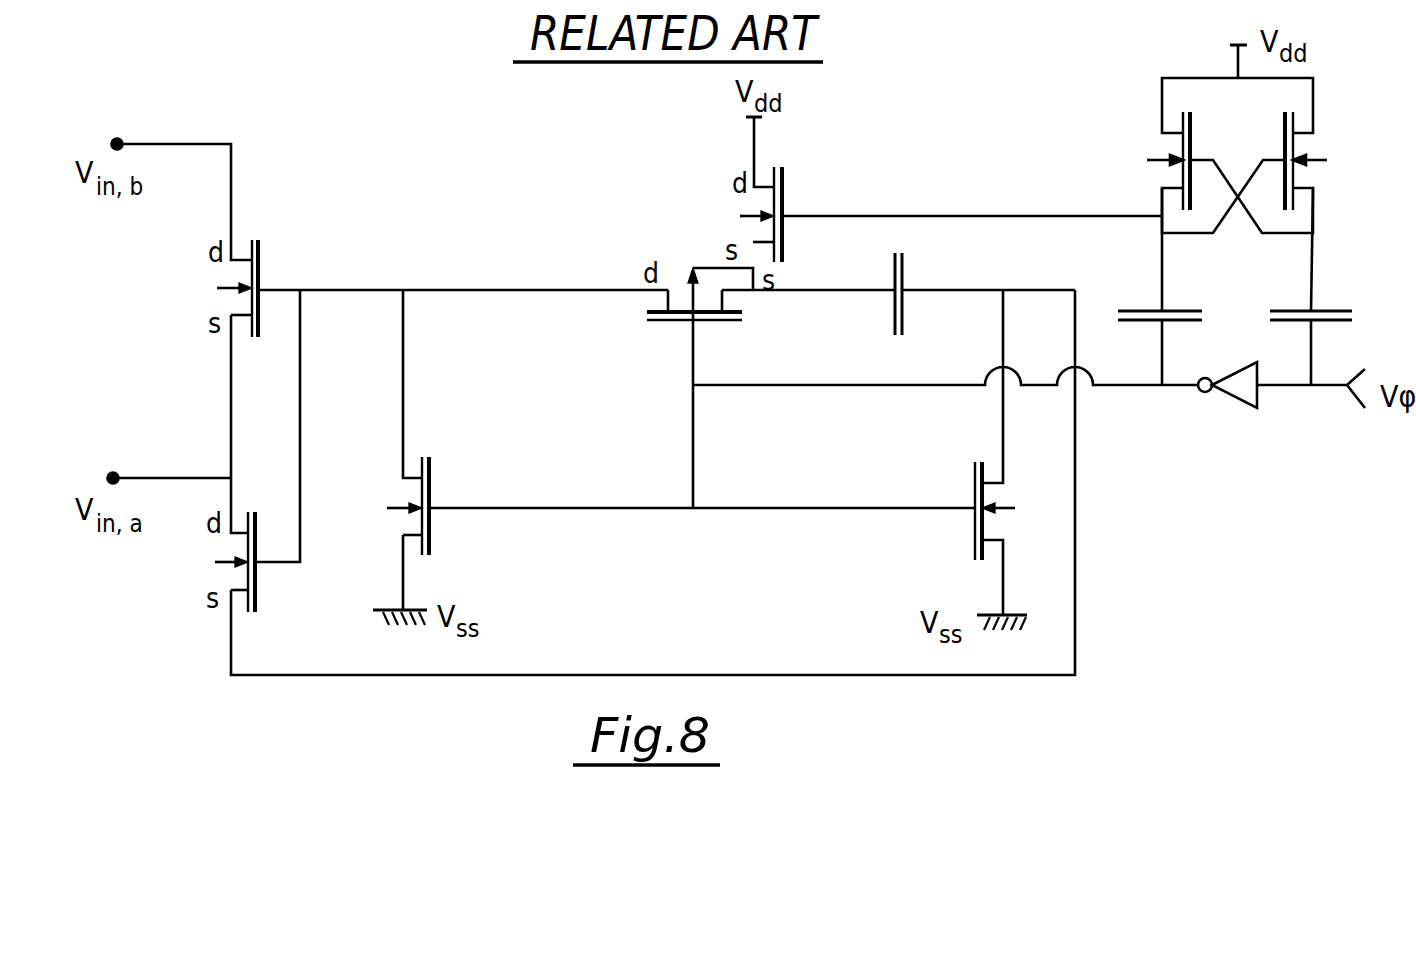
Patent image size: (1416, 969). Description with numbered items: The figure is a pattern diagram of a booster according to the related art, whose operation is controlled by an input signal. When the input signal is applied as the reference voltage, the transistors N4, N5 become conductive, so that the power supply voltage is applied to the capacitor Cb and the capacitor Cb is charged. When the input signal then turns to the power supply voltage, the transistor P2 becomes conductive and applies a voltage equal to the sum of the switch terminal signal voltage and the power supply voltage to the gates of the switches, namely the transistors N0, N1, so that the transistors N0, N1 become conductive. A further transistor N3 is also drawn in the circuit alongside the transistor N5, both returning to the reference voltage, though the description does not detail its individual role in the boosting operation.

The switch transistor N0 is at (265, 288).
The switch transistor N1 is at (261, 562).
The transistor N3 is at (432, 506).
The transistor N4 is at (786, 214).
The transistor N5 is at (972, 511).
The transistor P2 is at (694, 314).
The capacitor Cb is at (900, 278).